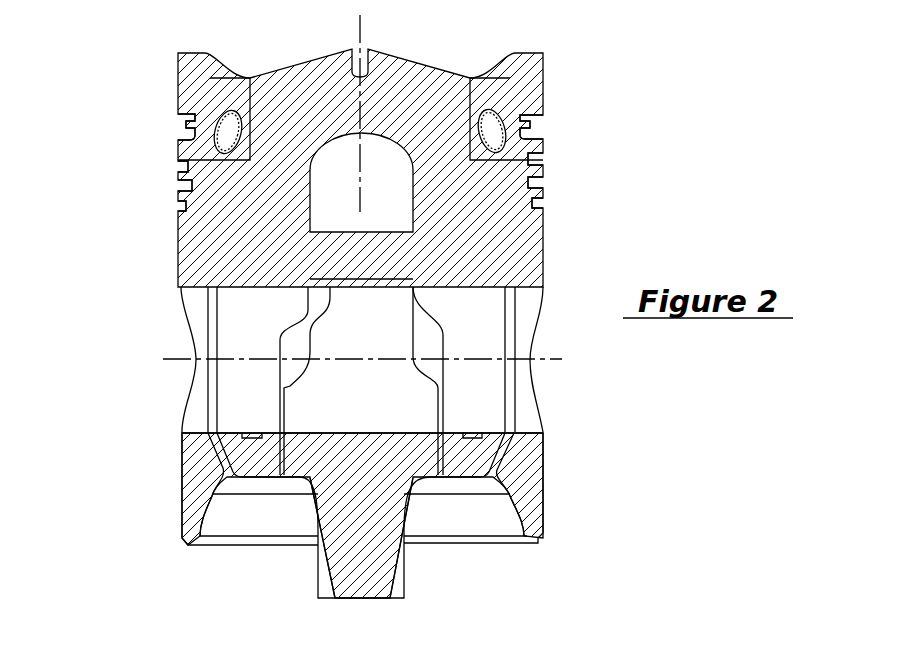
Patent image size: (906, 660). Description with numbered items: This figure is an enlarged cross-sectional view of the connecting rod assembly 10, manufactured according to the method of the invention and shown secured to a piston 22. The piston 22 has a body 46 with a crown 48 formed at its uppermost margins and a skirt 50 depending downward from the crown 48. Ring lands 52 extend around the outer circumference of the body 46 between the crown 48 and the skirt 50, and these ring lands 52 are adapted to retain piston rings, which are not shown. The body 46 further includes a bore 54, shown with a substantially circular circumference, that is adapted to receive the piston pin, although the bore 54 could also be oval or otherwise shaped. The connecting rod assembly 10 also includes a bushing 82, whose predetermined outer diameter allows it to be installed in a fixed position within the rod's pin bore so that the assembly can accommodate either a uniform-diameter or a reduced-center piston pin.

The connecting rod assembly 10 is at (337, 327).
The piston 22 is at (277, 150).
The body 46 is at (181, 252).
The crown 48 is at (203, 53).
The skirt 50 is at (182, 458).
The ring lands 52 is at (186, 162).
The bore 54 is at (543, 412).
The bushing 82 is at (281, 338).